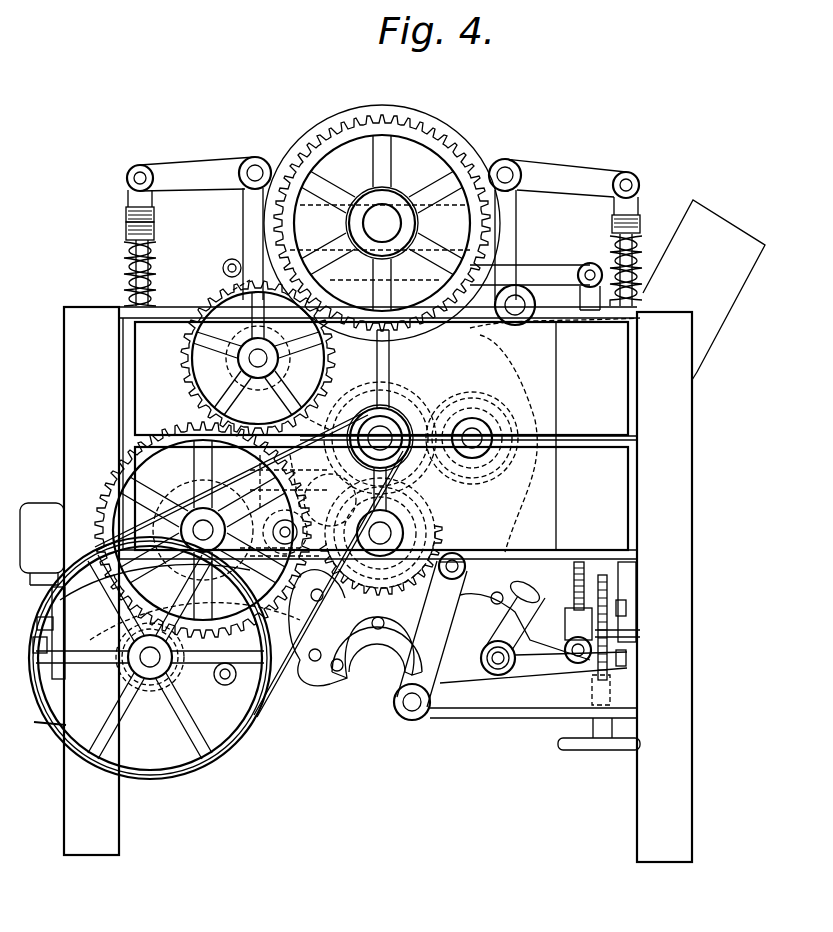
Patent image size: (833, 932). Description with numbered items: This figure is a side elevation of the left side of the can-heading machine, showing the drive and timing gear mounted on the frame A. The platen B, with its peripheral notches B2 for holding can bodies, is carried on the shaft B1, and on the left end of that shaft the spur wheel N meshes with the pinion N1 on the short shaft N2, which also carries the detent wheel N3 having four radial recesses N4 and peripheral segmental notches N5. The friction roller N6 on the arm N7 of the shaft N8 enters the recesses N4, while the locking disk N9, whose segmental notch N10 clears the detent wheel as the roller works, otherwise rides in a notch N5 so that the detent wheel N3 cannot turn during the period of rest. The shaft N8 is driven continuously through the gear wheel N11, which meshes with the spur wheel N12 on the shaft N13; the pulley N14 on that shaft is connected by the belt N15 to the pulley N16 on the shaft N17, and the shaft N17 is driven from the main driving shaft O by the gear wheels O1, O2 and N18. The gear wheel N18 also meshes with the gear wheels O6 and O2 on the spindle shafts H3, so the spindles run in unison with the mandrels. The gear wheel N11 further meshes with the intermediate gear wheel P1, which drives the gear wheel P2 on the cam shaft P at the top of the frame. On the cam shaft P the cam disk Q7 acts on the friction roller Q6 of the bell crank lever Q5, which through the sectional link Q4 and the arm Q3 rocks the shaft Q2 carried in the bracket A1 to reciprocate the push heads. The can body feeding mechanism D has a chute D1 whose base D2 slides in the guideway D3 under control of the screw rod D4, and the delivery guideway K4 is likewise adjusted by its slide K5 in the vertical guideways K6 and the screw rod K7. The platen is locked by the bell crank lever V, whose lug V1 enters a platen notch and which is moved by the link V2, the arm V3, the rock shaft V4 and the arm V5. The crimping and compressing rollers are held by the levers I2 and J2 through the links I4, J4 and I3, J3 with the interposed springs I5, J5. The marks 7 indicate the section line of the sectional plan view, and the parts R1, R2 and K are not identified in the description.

The section line 7— 7 is at (64, 432).
The gear wheel P2 is at (430, 152).
The cam disk Q7 is at (353, 116).
The cam shaft P is at (398, 222).
The arm V5 is at (450, 288).
The lever J2 is at (222, 162).
The main driving shaft O is at (284, 266).
The link J4 is at (135, 190).
The link J3 is at (137, 266).
The spring J5 is at (152, 272).
The lever I2 is at (570, 176).
The link I4 is at (640, 199).
The link I3 is at (634, 262).
The spring I5 is at (612, 246).
The arm V3 is at (536, 272).
The rock shaft V4 is at (505, 296).
The can body feeding mechanism D is at (706, 286).
The chute D1 is at (725, 306).
The intermediate gear wheel P1 is at (200, 346).
The gear wheel O1 is at (255, 356).
The gear wheel O2 is at (286, 367).
The spindle shaft H3 is at (516, 430).
The friction roller Q6 is at (372, 340).
The gear wheel N18 is at (395, 392).
The pulley N16 is at (410, 426).
The shaft N17 is at (392, 446).
The gear wheel O6 is at (482, 410).
The bell crank lever Q5 is at (542, 388).
The gear wheel N11 is at (186, 424).
The friction roller N6 is at (140, 520).
The arm N7 is at (150, 535).
The detent wheel N3 is at (203, 517).
The segmental notches N5 is at (290, 482).
The radial recesses N4 is at (368, 456).
The short shaft N2 is at (280, 530).
The shaft N8 is at (274, 550).
The pinion N1 is at (356, 533).
The platen shaft B1 is at (396, 531).
The belt N15 is at (336, 590).
The spur wheel N is at (400, 576).
The pulley N14 is at (208, 778).
The shaft N13 is at (140, 666).
The spur wheel N12 is at (154, 682).
The spokes R1 is at (160, 590).
The pin R2 is at (226, 686).
The segmental notch N10 is at (186, 582).
The locking disk N9 is at (202, 596).
The delivery guideway K4 is at (50, 512).
The bar K is at (56, 630).
The slide K5 is at (40, 624).
The vertical guideways K6 is at (40, 657).
The adjusting screw rod K7 is at (40, 728).
The sectional link Q4 is at (470, 556).
The rock shaft Q2 is at (411, 712).
The platen B is at (442, 560).
The notches B2 is at (382, 648).
The bracket A1 is at (505, 720).
The frame A is at (672, 746).
The arm Q3 is at (436, 630).
The lug V1 is at (536, 594).
The bell crank lever V is at (520, 628).
The link V2 is at (578, 562).
The base D2 is at (600, 562).
The guideway D3 is at (640, 601).
The screw rod D4 is at (640, 634).